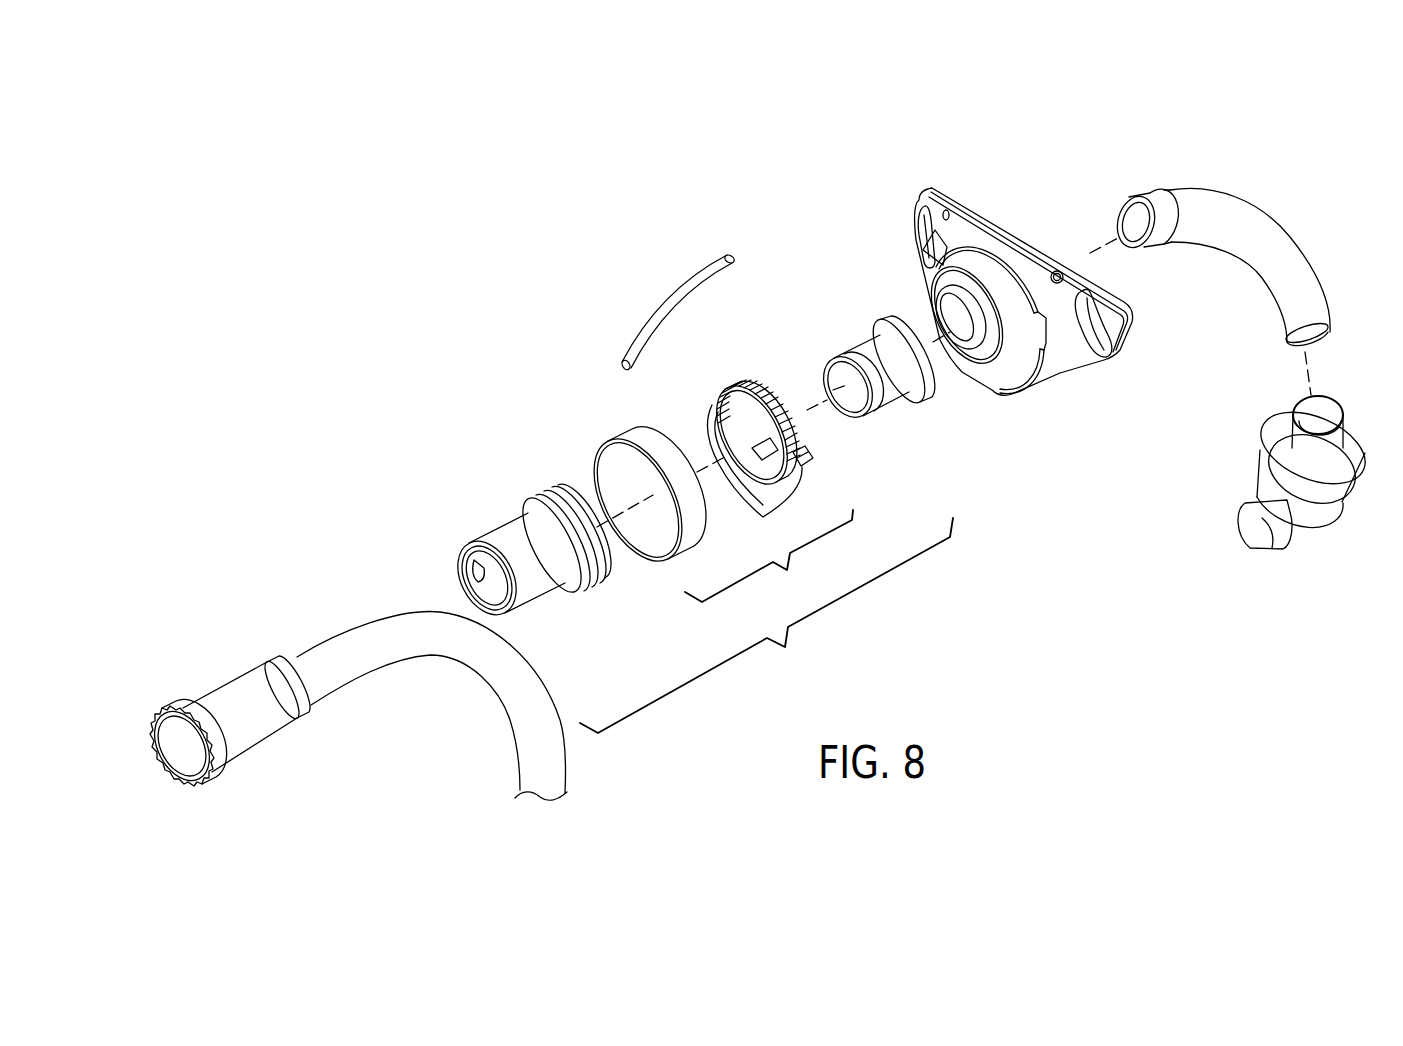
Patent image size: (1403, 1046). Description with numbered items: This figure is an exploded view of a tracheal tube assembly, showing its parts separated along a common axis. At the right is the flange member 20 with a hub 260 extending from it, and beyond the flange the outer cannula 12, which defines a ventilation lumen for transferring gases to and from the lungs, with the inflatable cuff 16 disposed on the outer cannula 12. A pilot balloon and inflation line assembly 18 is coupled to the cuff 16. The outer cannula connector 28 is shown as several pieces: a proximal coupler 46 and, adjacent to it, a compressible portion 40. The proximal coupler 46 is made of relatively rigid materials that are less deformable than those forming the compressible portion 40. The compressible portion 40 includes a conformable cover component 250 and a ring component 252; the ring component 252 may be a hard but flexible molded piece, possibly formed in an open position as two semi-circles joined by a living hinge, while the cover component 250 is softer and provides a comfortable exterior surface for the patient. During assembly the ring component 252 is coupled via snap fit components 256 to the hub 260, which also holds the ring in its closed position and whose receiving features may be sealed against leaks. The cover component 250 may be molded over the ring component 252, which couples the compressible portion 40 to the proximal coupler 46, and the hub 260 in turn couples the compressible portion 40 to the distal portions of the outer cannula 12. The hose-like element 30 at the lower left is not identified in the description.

The outer cannula 12 is at (1252, 200).
The inflatable cuff 16 is at (1328, 508).
The pilot balloon and inflation line assembly 18 is at (660, 298).
The flange member 20 is at (1003, 210).
The outer cannula connector 28 is at (766, 625).
The hose 30 is at (222, 680).
The compressible portion 40 is at (769, 556).
The proximal coupler 46 is at (497, 530).
The cover component 250 is at (617, 435).
The ring component 252 is at (810, 438).
The snap fit components 256 is at (763, 518).
The hub 260 is at (877, 347).